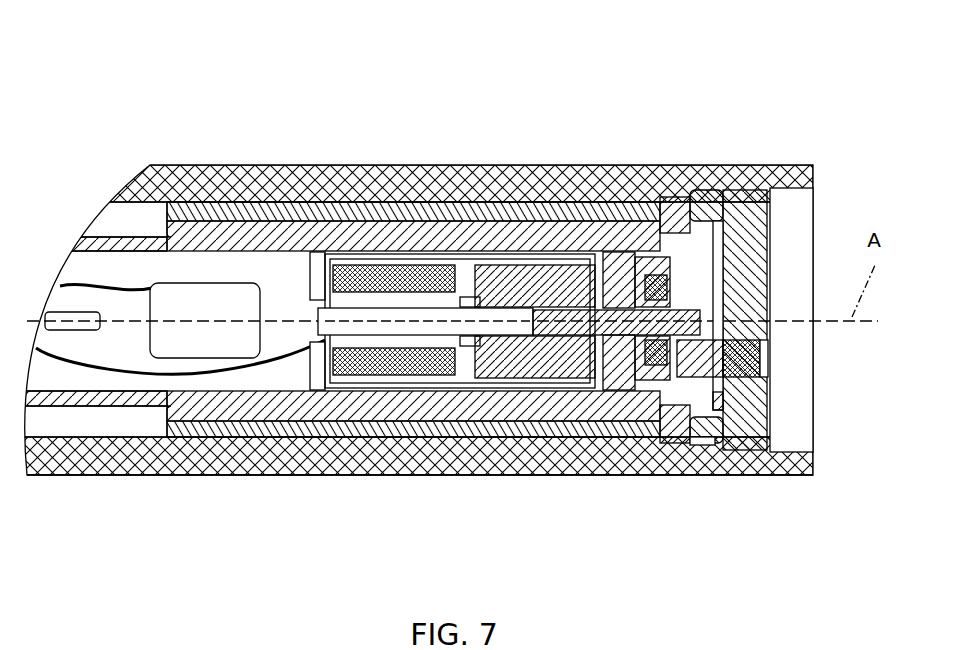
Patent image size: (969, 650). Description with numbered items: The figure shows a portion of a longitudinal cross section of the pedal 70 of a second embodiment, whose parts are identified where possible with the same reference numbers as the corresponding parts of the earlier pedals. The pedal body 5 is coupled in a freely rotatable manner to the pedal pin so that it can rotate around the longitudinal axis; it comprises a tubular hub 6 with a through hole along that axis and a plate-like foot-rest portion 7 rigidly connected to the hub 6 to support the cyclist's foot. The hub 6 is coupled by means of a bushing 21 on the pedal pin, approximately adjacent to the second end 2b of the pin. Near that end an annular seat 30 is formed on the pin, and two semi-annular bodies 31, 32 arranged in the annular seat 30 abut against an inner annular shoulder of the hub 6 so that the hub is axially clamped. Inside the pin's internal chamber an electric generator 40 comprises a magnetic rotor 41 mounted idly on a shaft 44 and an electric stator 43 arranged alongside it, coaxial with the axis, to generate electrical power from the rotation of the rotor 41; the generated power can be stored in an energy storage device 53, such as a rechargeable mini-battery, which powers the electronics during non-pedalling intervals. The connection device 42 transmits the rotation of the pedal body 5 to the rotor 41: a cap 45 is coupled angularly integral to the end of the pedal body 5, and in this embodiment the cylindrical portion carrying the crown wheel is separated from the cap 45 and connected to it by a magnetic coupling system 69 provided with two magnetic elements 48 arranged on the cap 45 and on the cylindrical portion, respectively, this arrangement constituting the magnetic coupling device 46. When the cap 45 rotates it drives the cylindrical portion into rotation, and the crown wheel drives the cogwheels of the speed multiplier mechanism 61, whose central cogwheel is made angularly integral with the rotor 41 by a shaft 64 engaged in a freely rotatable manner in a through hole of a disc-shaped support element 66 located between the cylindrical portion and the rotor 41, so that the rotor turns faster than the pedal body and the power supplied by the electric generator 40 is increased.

The pedal body 5 is at (205, 155).
The foot-rest portion 7 is at (230, 166).
The hub 6 is at (300, 190).
The bushing 21 is at (353, 203).
The shaft 44 is at (388, 297).
The electric generator 40 is at (505, 343).
The shaft 64 is at (573, 298).
The speed multiplier mechanism 61 is at (645, 252).
The semi-annular body 31 is at (672, 197).
The connection device 42 is at (705, 185).
The second end 2b is at (748, 225).
The magnetic coupling system 69 is at (727, 332).
The cap 45 is at (770, 368).
The magnetic element 48 is at (708, 372).
The magnetic coupling device 46 is at (720, 404).
The semi-annular body 32 is at (687, 446).
The annular seat 30 is at (680, 412).
The disc-shaped support element 66 is at (613, 392).
The magnetic rotor 41 is at (542, 375).
The electric stator 43 is at (398, 380).
The pedal 70 is at (170, 486).
The energy storage device 53 is at (208, 300).